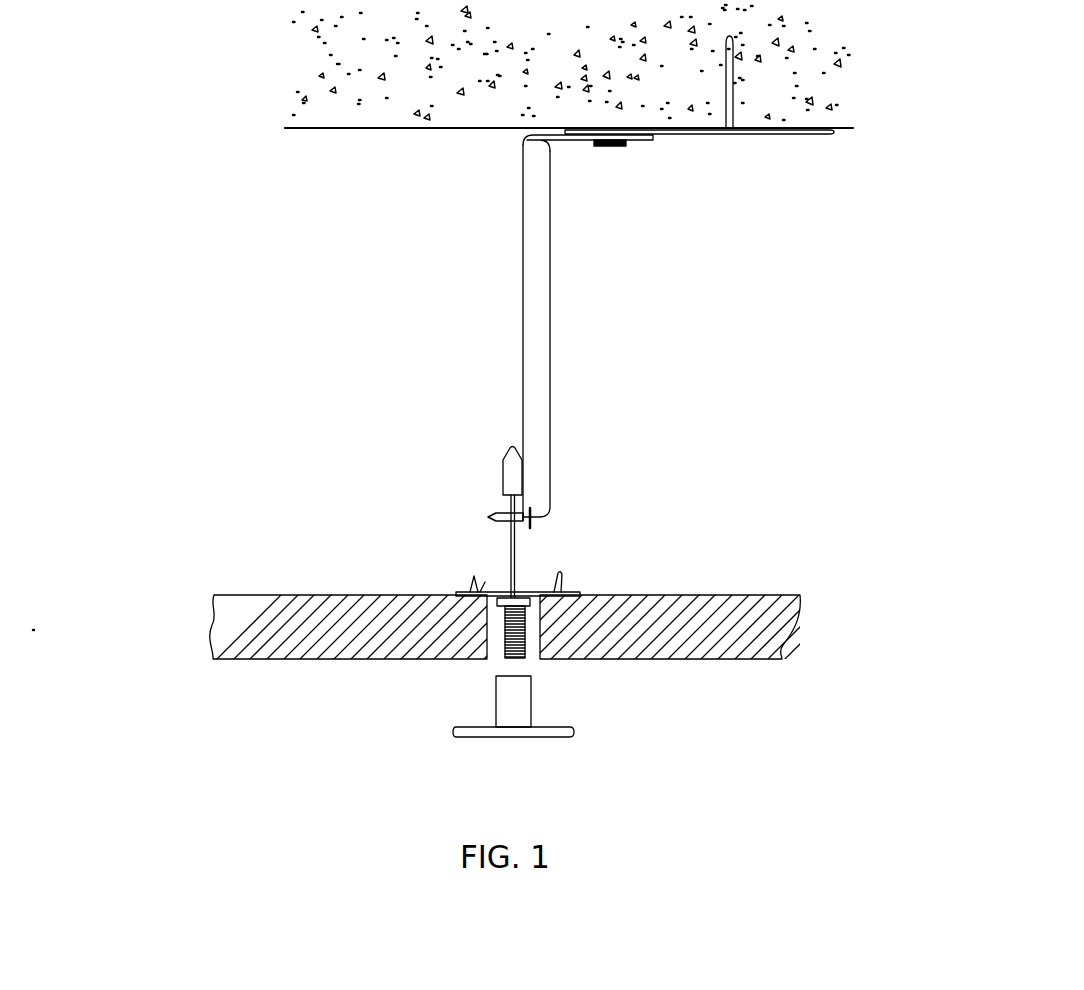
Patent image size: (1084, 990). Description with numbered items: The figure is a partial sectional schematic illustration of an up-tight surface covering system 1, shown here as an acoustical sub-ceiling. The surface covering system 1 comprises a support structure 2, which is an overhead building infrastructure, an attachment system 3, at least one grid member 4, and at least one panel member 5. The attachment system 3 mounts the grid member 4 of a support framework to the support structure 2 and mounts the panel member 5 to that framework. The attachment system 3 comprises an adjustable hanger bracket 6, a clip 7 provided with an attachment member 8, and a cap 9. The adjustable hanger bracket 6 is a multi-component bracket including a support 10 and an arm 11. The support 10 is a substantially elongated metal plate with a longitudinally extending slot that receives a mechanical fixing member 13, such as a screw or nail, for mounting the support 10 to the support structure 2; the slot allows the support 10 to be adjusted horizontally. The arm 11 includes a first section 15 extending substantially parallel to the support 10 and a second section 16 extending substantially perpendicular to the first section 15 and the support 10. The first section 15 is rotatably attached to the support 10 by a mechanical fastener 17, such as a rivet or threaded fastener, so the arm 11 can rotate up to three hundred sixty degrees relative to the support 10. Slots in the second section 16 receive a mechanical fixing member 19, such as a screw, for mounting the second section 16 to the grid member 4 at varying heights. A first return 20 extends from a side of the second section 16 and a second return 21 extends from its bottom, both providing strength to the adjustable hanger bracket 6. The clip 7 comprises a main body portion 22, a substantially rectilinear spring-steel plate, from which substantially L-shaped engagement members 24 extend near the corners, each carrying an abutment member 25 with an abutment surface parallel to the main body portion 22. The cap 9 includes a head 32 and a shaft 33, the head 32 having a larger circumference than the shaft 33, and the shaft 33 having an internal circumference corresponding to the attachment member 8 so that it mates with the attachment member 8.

The surface covering system 1 is at (199, 137).
The support structure 2 is at (846, 100).
The attachment system 3 is at (637, 398).
The grid member 4 is at (502, 478).
The panel member 5 is at (765, 613).
The adjustable hanger bracket 6 is at (542, 349).
The clip 7 is at (507, 545).
The attachment member 8 is at (523, 650).
The cap 9 is at (478, 728).
The support 10 is at (772, 136).
The arm 11 is at (523, 229).
The mechanical fixing member 13 is at (726, 138).
The first section 15 is at (568, 140).
The second section 16 is at (534, 377).
The mechanical fastener 17 is at (610, 142).
The mechanical fixing member 19 is at (530, 524).
The first return 20 is at (540, 325).
The second return 21 is at (516, 524).
The main body portion 22 is at (493, 592).
The engagement member 24 is at (469, 592).
The abutment member 25 is at (560, 590).
The head 32 is at (565, 738).
The shaft 33 is at (522, 703).